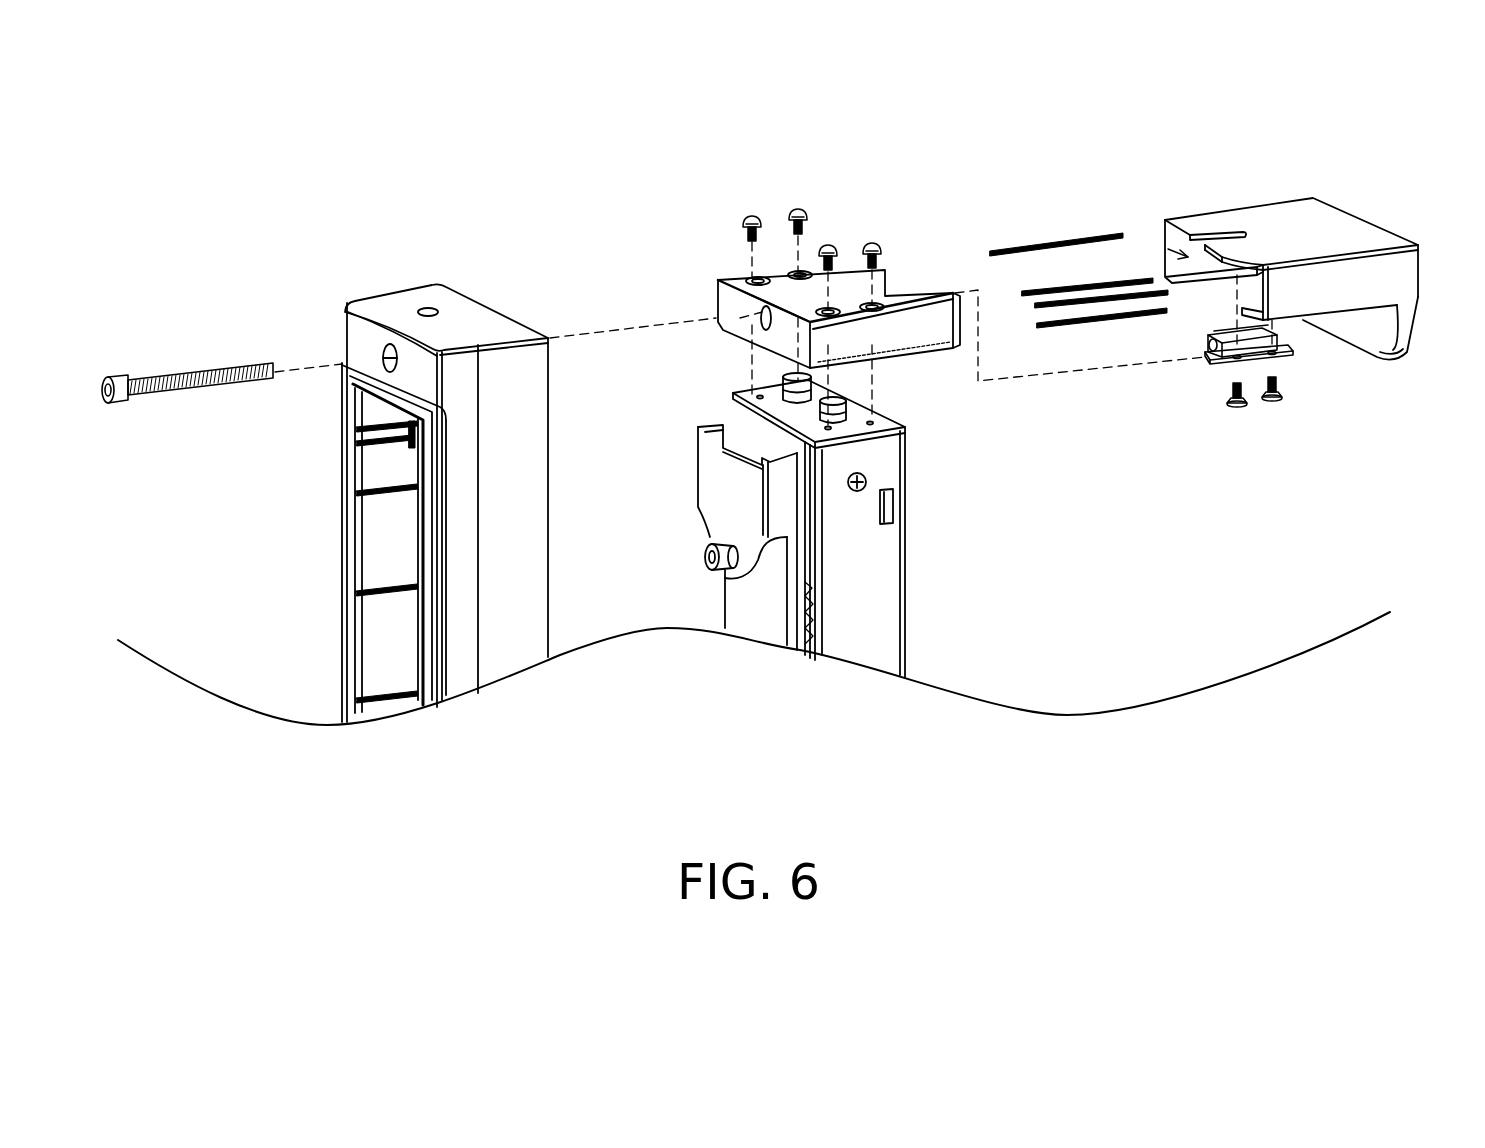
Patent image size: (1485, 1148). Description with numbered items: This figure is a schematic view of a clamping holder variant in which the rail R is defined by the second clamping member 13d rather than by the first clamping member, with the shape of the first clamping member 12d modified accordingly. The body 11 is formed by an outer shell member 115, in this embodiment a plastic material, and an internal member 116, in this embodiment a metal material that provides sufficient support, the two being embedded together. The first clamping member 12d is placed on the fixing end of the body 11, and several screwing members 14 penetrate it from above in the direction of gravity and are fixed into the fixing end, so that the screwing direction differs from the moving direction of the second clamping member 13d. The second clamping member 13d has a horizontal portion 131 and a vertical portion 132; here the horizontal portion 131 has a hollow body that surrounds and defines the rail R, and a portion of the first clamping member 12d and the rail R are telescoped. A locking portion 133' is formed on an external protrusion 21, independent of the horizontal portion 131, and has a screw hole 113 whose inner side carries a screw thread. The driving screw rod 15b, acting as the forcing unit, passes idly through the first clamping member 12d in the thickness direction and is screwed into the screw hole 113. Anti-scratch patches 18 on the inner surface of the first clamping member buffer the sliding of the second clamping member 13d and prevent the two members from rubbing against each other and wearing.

The body 11 is at (172, 115).
The outer shell member 115 is at (417, 292).
The internal member 116 is at (888, 602).
The driving screw rod 15b is at (190, 370).
The screwing members 14 is at (758, 213).
The first clamping member 12d is at (852, 263).
The anti-scratch patches 18 is at (1040, 242).
The rail R is at (1162, 245).
The second clamping member 13d is at (1285, 200).
The horizontal portion 131 is at (1352, 267).
The vertical portion 132 is at (1410, 313).
The locking portion 133' is at (1281, 385).
The screw hole 113 is at (1208, 353).
The external protrusion 21 is at (1218, 363).